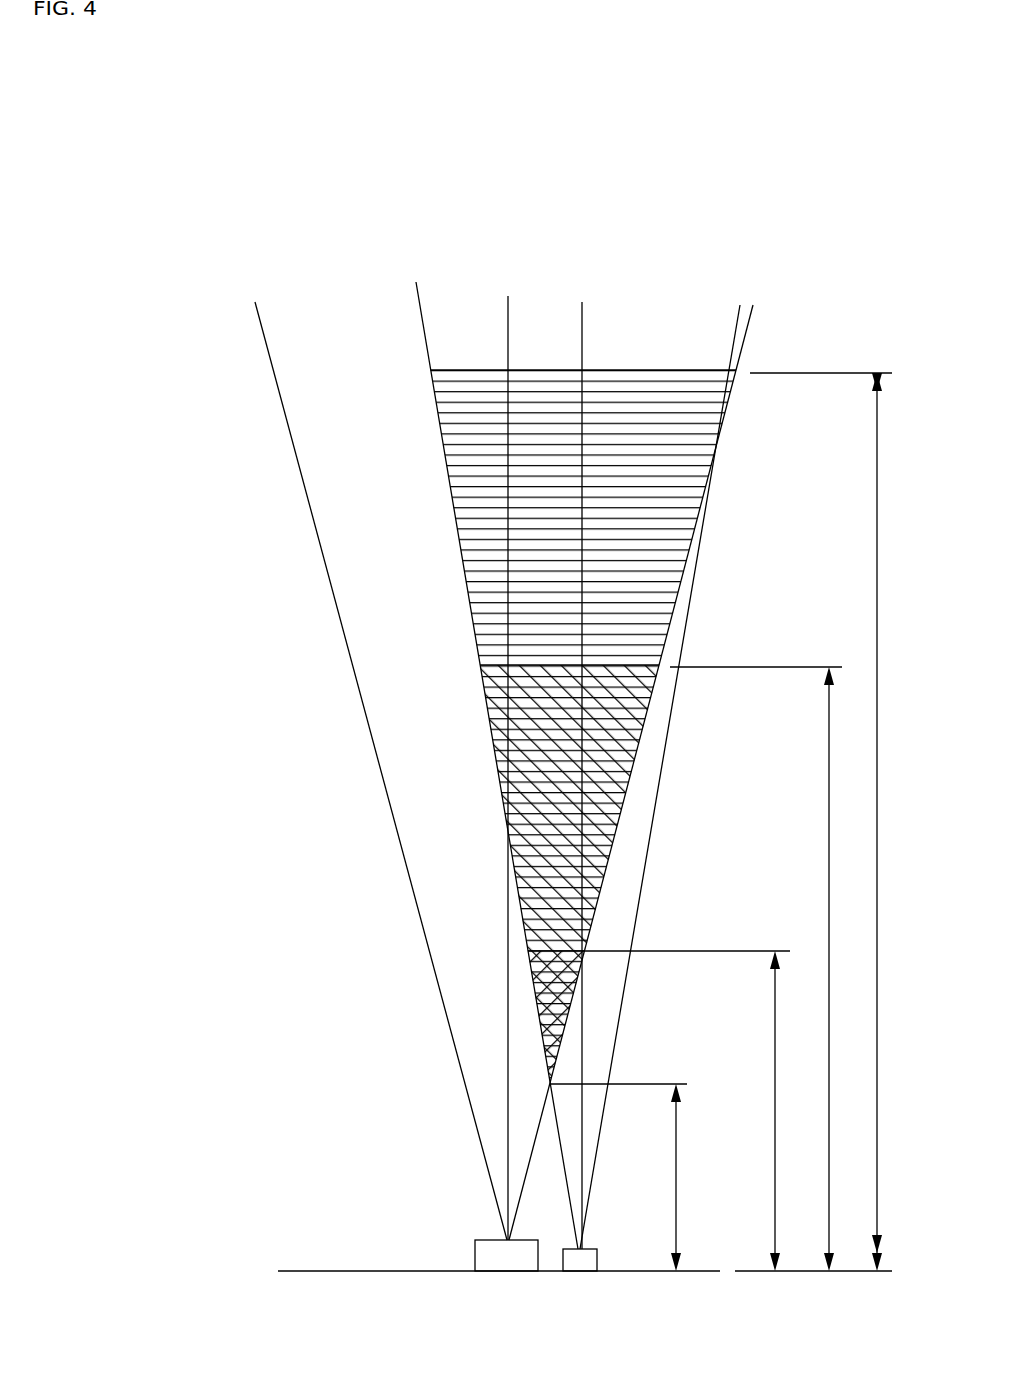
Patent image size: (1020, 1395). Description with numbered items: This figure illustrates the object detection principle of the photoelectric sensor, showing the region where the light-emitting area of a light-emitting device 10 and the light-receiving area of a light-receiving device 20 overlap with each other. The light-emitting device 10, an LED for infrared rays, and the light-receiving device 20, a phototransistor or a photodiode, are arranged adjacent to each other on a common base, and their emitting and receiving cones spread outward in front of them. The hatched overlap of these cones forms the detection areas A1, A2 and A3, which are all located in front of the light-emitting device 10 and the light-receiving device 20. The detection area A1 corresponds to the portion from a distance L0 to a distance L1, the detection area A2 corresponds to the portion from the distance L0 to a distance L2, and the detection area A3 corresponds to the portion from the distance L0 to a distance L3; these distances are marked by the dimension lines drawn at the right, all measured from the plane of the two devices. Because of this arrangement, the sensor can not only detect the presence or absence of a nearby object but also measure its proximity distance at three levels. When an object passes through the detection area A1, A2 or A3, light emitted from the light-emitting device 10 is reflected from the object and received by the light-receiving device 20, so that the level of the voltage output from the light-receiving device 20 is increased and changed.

The light-emitting device 10 is at (583, 1258).
The light-receiving device 20 is at (505, 1258).
The detection area A1 is at (575, 993).
The detection area A2 is at (608, 821).
The detection area A3 is at (648, 545).
The distance L0 is at (618, 1177).
The distance L1 is at (659, 1111).
The distance L2 is at (756, 969).
The distance L3 is at (821, 822).